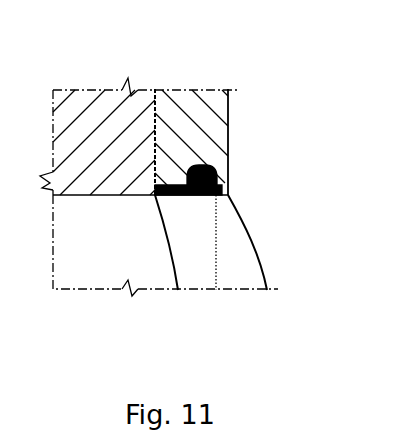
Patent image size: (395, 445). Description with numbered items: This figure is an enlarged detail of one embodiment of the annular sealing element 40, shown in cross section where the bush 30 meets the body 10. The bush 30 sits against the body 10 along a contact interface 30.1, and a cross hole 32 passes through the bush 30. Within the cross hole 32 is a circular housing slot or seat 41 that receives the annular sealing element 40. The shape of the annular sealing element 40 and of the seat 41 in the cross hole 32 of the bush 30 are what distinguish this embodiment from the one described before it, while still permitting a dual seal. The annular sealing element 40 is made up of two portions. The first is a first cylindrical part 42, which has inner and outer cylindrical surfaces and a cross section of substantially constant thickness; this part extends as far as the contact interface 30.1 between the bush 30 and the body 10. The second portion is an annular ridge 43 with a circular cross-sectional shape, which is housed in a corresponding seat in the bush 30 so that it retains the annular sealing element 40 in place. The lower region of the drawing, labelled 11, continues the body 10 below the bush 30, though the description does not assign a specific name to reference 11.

The body 10 is at (93, 95).
The lower section of first component 11 is at (97, 265).
The bush 30 is at (186, 108).
The contact interface 30.1 is at (148, 105).
The cross hole 32 is at (267, 266).
The annular sealing element 40 is at (228, 172).
The circular housing slot or seat 41 is at (217, 223).
The first cylindrical part 42 is at (172, 195).
The annular ridge 43 is at (207, 170).